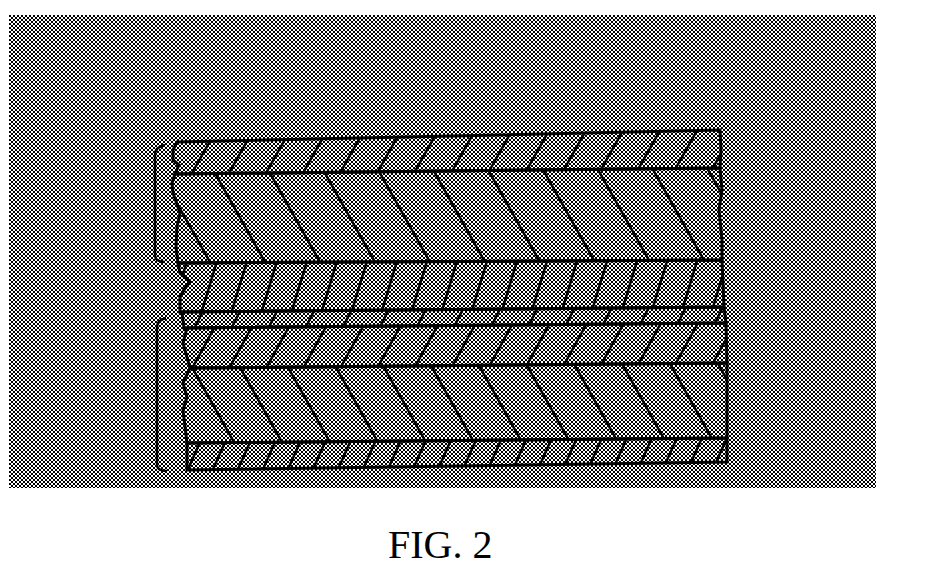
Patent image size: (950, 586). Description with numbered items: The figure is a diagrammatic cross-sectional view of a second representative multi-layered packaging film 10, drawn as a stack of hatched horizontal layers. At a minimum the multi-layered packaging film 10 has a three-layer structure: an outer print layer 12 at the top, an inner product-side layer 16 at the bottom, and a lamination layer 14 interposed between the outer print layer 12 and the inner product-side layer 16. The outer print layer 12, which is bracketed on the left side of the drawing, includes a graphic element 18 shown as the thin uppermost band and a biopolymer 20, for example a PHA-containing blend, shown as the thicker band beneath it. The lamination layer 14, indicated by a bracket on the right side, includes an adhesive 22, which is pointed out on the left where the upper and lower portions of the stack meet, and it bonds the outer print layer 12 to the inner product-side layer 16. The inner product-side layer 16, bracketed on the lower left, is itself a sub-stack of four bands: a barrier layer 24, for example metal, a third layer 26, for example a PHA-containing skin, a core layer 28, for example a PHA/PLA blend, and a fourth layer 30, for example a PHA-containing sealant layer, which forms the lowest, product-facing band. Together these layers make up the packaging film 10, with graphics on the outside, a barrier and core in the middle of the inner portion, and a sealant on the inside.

The multi-layered packaging film 10 is at (149, 73).
The outer print layer 12 is at (154, 202).
The lamination layer 14 is at (737, 255).
The inner product-side layer 16 is at (156, 383).
The graphic element 18 is at (720, 147).
The biopolymer 20 is at (717, 205).
The adhesive 22 is at (203, 285).
The barrier layer 24 is at (707, 318).
The third layer 26 is at (708, 345).
The core layer 28 is at (710, 400).
The fourth layer 30 is at (705, 448).